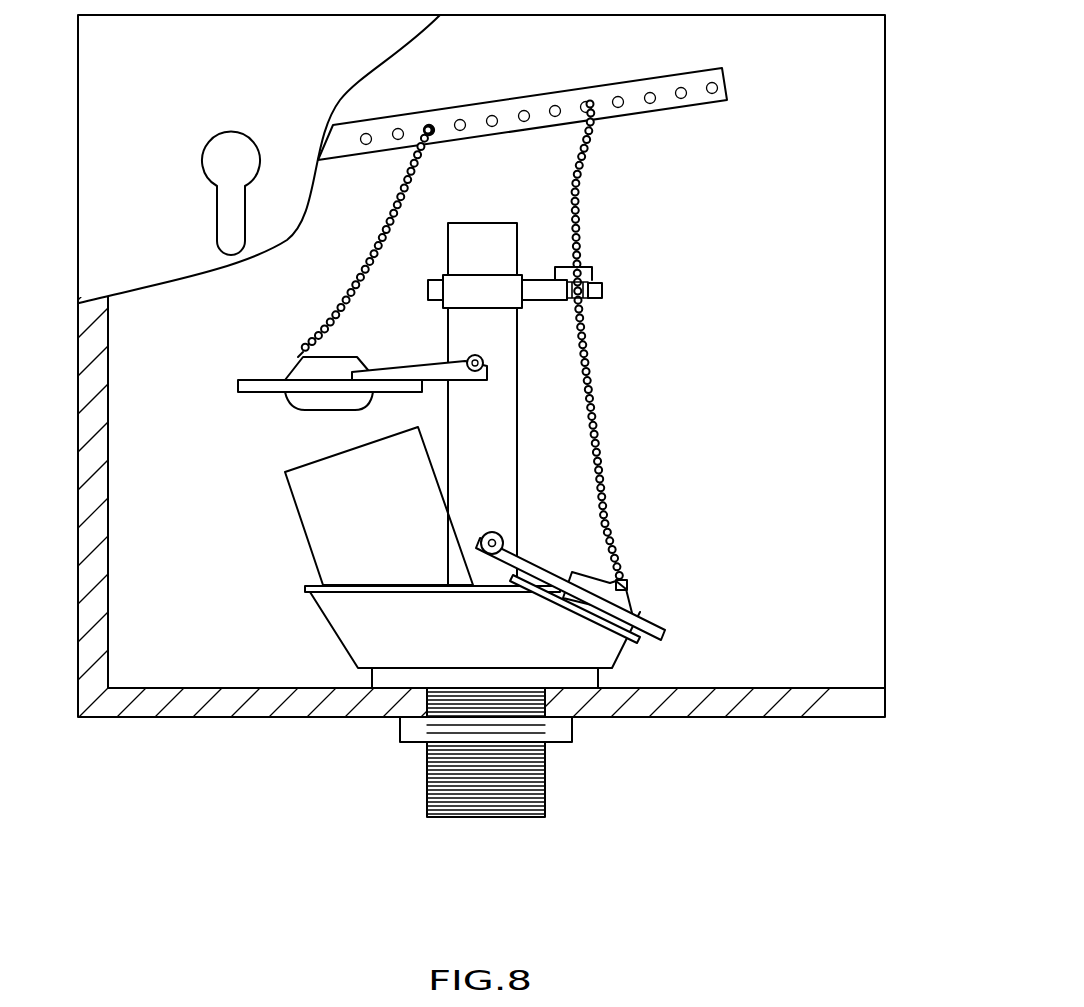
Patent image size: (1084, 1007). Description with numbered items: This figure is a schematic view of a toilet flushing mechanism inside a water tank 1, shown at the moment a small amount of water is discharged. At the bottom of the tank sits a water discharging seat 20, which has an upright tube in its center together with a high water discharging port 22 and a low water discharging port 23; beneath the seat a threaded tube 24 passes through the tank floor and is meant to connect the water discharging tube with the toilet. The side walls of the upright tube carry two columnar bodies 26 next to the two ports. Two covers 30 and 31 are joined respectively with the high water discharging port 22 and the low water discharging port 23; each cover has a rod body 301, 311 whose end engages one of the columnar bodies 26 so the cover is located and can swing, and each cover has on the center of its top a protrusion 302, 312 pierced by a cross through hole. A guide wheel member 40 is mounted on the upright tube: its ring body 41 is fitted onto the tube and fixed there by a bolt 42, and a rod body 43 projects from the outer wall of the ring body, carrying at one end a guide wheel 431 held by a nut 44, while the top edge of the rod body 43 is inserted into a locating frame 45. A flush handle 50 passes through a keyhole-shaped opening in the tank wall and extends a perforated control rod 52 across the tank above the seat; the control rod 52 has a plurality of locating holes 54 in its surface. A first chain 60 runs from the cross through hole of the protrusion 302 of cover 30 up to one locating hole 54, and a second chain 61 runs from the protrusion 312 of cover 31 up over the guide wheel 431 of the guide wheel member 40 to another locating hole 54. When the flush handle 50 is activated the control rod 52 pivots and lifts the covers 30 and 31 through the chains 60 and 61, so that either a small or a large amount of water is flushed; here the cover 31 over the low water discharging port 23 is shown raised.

The water tank 1 is at (80, 466).
The water discharging seat 20 is at (333, 622).
The high water discharging port 22 is at (297, 490).
The low water discharging port 23 is at (638, 632).
The threaded tube 24 is at (572, 724).
The columnar bodies 26 is at (488, 366).
The cover 30 is at (353, 366).
The rod body 301 is at (425, 370).
The protrusion 302 is at (300, 354).
The cover 31 is at (601, 572).
The rod body 311 is at (552, 570).
The protrusion 312 is at (628, 582).
The guide wheel member 40 is at (547, 391).
The ring body 41 is at (518, 278).
The bolt 42 is at (433, 280).
The rod body 43 is at (545, 302).
The guide wheel 431 is at (590, 303).
The nut 44 is at (604, 288).
The locating frame 45 is at (590, 268).
The flush handle 50 is at (217, 212).
The control rod 52 is at (473, 113).
The locating holes 54 is at (556, 118).
The chain 60 is at (369, 266).
The chain 61 is at (607, 468).